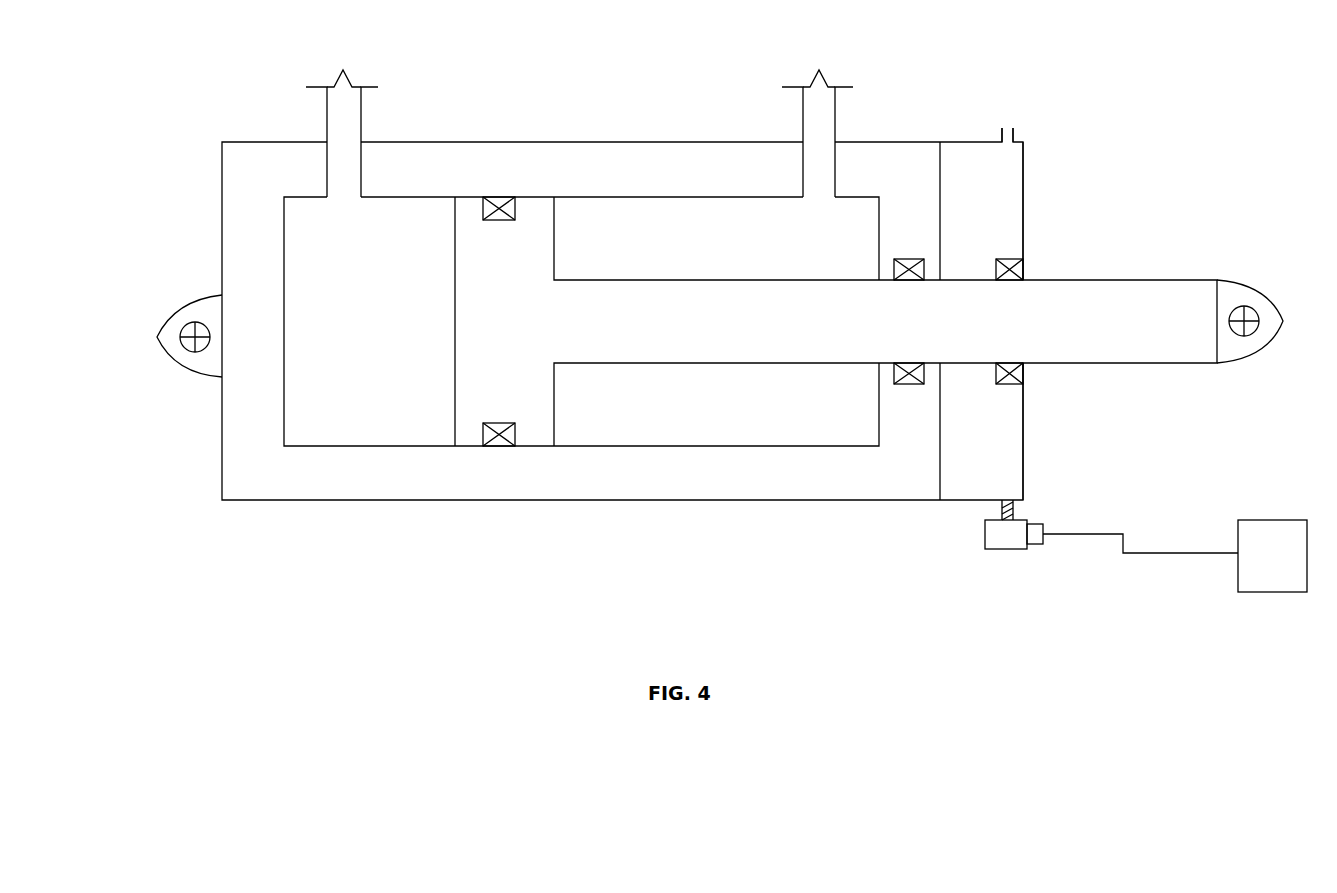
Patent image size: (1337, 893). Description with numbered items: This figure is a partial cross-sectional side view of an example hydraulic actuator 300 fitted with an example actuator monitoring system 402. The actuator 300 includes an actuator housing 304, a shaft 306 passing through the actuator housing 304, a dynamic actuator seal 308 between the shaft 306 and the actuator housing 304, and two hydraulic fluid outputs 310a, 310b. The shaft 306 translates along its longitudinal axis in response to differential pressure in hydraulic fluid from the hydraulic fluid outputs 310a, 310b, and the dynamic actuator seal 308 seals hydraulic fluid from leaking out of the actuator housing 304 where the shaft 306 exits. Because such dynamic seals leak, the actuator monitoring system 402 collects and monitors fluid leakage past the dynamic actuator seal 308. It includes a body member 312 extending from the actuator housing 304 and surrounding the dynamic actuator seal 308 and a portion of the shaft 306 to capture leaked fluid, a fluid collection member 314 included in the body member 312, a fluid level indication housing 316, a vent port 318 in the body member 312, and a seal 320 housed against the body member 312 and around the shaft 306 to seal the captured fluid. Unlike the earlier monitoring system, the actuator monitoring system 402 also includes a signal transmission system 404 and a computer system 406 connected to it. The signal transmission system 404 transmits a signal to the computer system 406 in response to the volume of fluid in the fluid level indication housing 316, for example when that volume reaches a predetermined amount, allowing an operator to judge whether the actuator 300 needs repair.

The actuator 300 is at (247, 66).
The actuator housing 304 is at (465, 483).
The shaft 306 is at (869, 321).
The dynamic actuator seal 308 is at (897, 382).
The hydraulic fluid output 310a is at (345, 126).
The hydraulic fluid output 310b is at (812, 130).
The body member 312 is at (1020, 173).
The fluid collection member 314 is at (1015, 515).
The fluid level indication housing 316 is at (990, 549).
The vent port 318 is at (1010, 125).
The seal 320 is at (1016, 386).
The actuator monitoring system 402 is at (982, 80).
The signal transmission system 404 is at (1037, 549).
The computer system 406 is at (1272, 556).